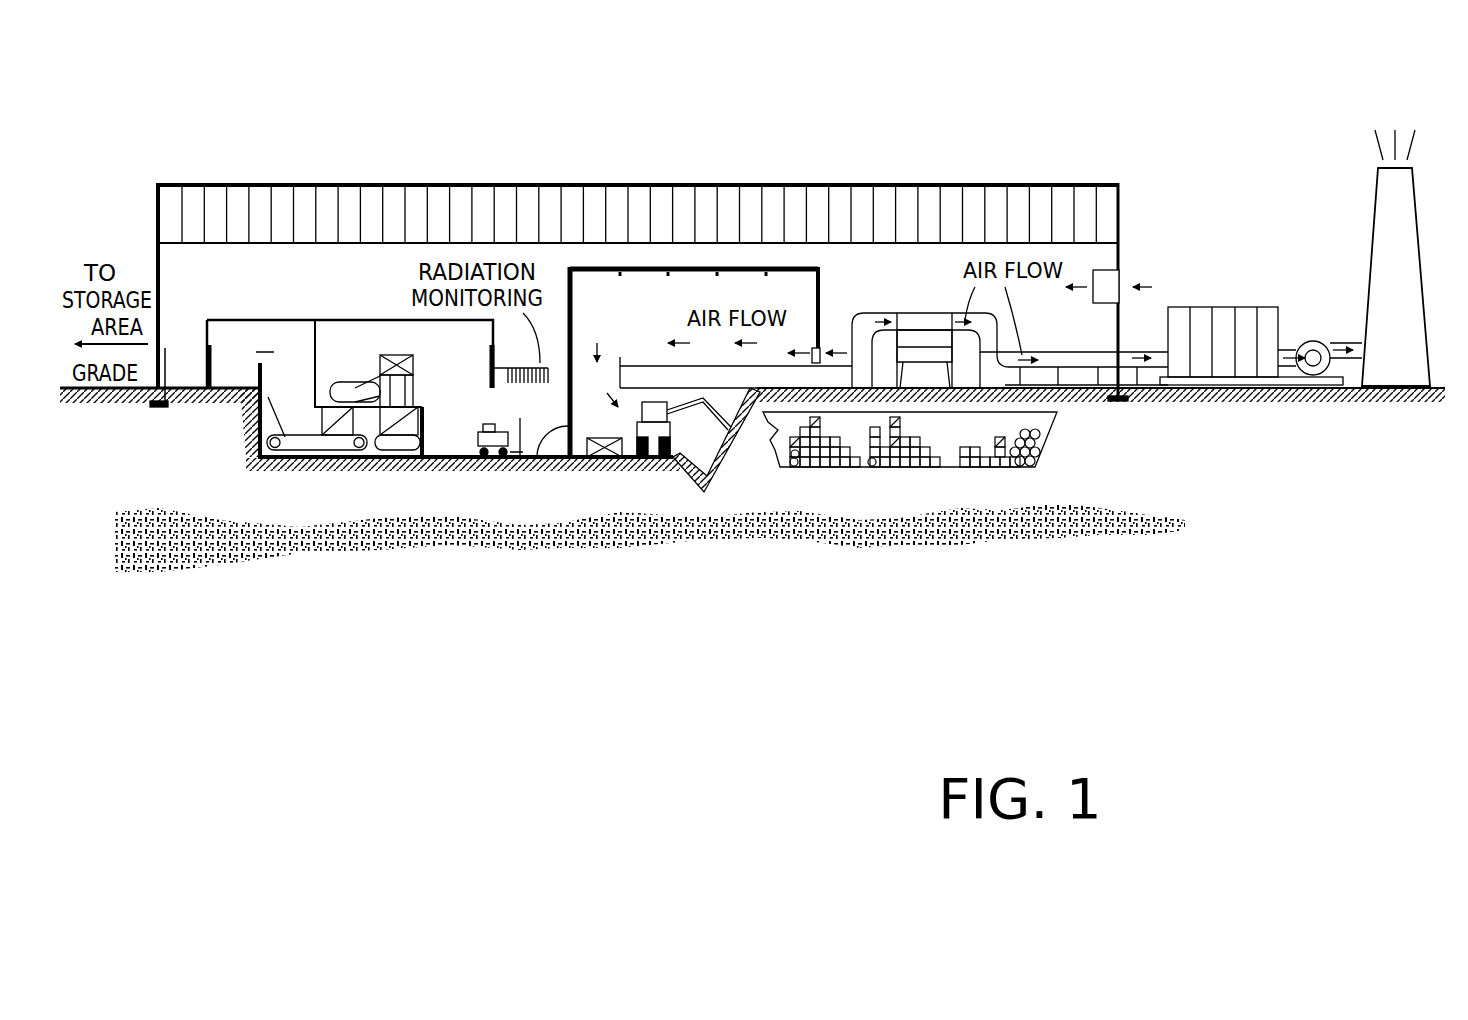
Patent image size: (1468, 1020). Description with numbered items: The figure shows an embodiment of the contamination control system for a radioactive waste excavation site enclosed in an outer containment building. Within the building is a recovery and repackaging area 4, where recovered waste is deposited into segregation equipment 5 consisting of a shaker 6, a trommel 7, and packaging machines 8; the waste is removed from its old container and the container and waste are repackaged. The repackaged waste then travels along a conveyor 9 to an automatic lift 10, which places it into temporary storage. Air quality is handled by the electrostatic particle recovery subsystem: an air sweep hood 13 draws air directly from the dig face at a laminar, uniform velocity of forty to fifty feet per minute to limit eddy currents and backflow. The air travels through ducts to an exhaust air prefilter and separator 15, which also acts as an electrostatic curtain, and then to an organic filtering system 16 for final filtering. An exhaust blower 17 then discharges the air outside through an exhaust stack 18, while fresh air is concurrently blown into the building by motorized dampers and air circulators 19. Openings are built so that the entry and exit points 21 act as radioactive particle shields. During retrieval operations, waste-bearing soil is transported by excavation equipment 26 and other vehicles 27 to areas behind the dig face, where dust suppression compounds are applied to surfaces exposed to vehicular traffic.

The recovery and repackaging area 4 is at (350, 354).
The segregation equipment 5 is at (363, 383).
The shaker 6 is at (417, 368).
The trommel 7 is at (320, 393).
The packaging machines 8 is at (417, 392).
The conveyor 9 is at (305, 437).
The automatic lift 10 is at (258, 435).
The air sweep hood 13 is at (653, 367).
The exhaust air prefilter and separator 15 is at (927, 310).
The organic filtering system 16 is at (1225, 307).
The exhaust blower 17 is at (1313, 340).
The exhaust stack 18 is at (1373, 205).
The motorized dampers and air circulators 19 is at (820, 350).
The entry and exit points 21 is at (537, 457).
The excavation equipment 26 is at (653, 460).
The other vehicles 27 is at (515, 430).